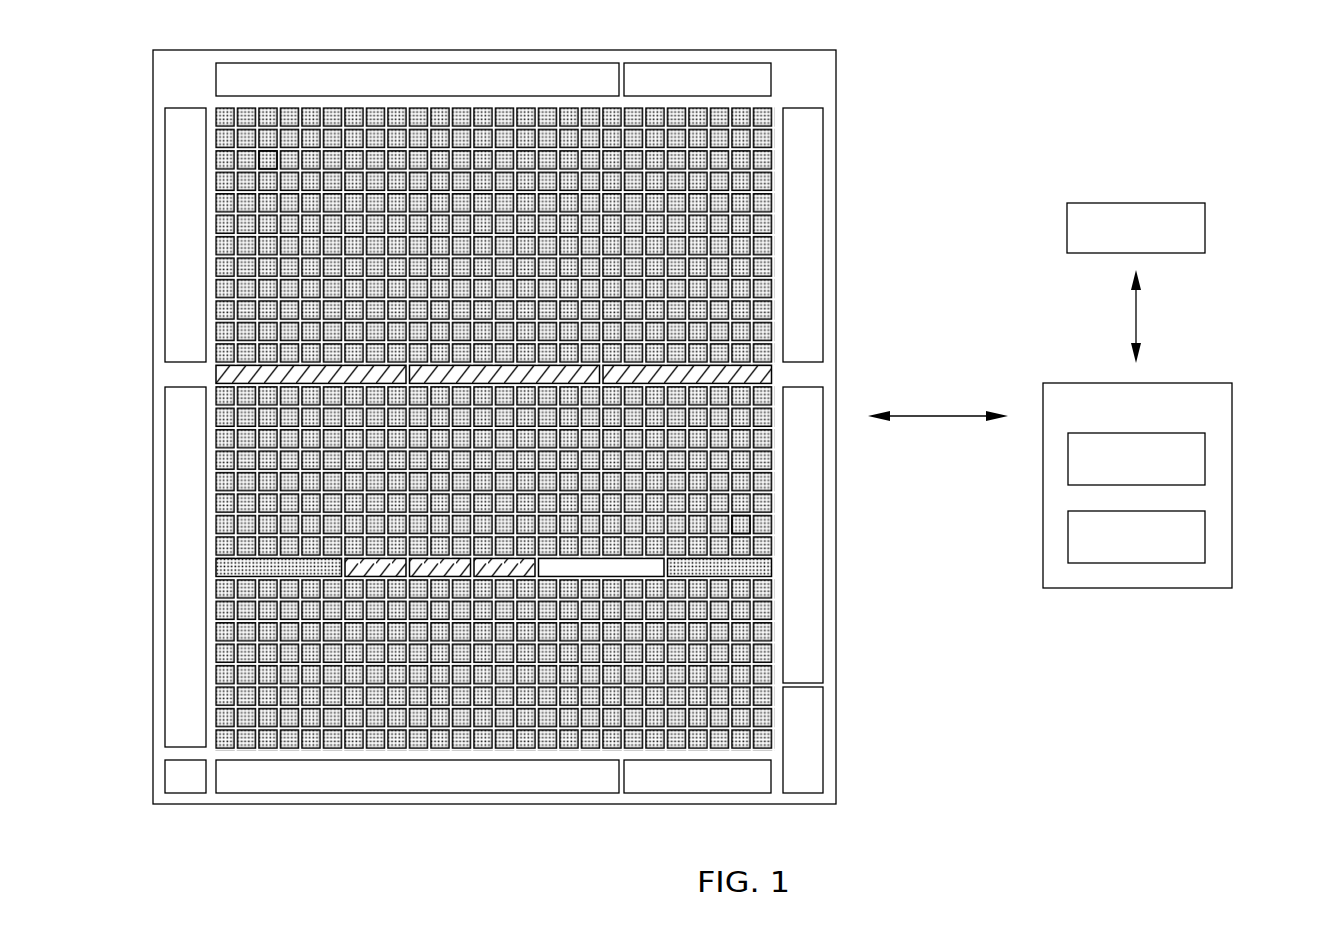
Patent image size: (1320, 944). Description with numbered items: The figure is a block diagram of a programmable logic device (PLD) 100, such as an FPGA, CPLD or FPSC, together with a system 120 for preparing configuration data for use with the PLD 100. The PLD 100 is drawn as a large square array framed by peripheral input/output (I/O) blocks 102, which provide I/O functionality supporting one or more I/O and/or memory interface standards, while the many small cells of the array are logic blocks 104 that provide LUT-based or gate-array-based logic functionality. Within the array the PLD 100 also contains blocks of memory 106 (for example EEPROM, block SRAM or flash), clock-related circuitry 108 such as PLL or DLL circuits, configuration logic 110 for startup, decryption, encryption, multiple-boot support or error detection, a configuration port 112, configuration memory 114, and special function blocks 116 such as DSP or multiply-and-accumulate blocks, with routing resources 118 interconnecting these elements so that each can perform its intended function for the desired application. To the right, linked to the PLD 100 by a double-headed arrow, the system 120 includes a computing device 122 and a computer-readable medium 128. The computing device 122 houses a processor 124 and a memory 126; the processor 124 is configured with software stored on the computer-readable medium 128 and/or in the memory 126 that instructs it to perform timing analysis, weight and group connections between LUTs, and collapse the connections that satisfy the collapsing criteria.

The programmable logic device 100 is at (880, 105).
The input/output blocks 102 is at (819, 206).
The logic blocks 104 is at (270, 159).
The blocks of memory 106 is at (350, 565).
The clock-related circuitry 108 is at (236, 568).
The configuration logic 110 is at (653, 568).
The configuration port 112 is at (821, 732).
The configuration memory 114 is at (173, 777).
The special function blocks 116 is at (216, 375).
The routing resources 118 is at (216, 236).
The system 120 is at (1000, 247).
The computing device 122 is at (1232, 399).
The processor 124 is at (1205, 518).
The memory 126 is at (1205, 443).
The computer-readable medium 128 is at (1205, 218).